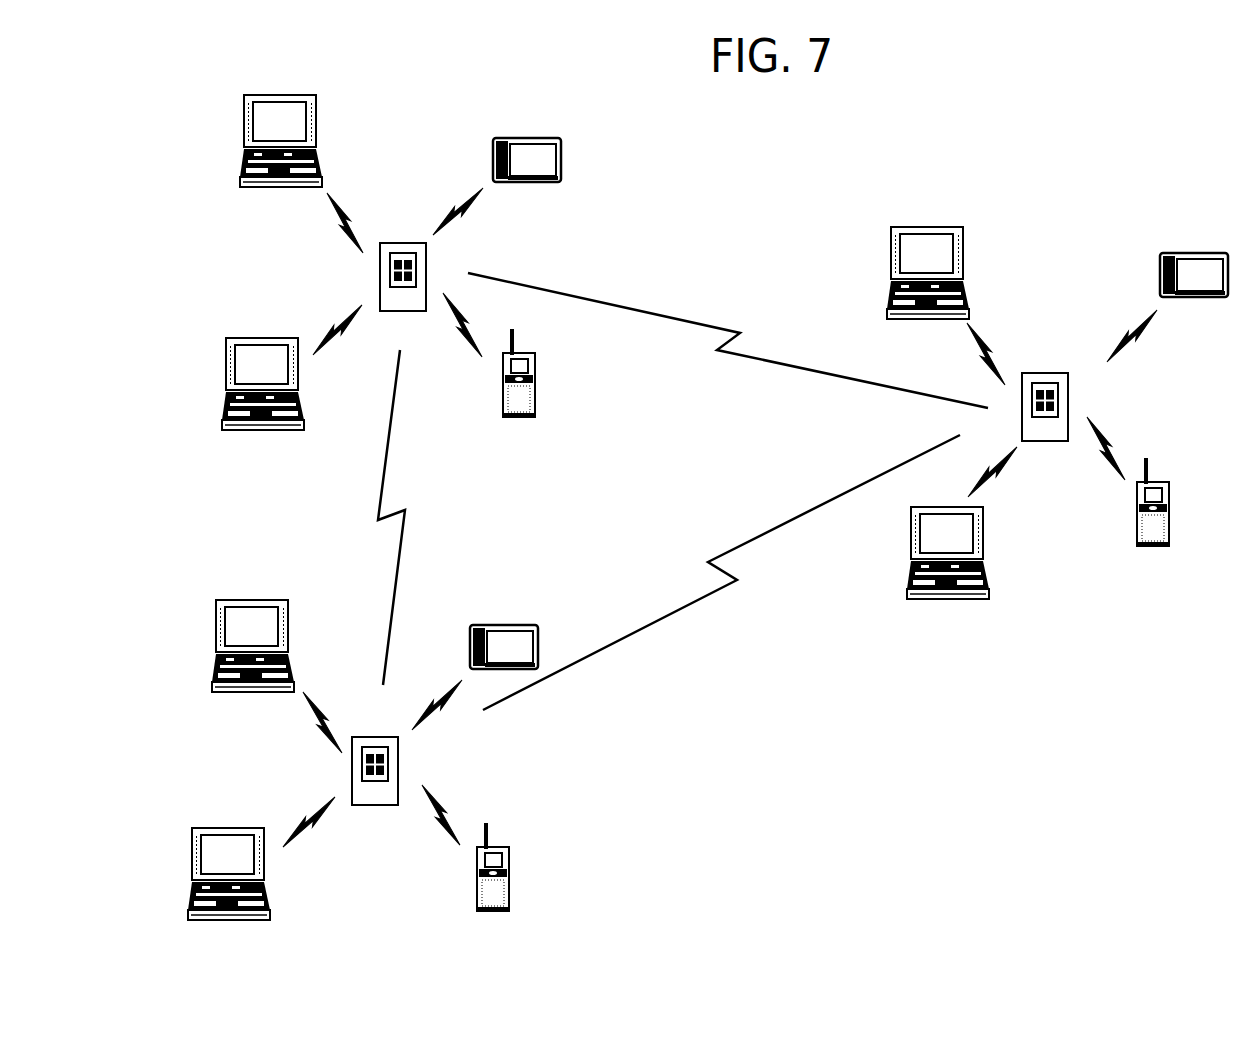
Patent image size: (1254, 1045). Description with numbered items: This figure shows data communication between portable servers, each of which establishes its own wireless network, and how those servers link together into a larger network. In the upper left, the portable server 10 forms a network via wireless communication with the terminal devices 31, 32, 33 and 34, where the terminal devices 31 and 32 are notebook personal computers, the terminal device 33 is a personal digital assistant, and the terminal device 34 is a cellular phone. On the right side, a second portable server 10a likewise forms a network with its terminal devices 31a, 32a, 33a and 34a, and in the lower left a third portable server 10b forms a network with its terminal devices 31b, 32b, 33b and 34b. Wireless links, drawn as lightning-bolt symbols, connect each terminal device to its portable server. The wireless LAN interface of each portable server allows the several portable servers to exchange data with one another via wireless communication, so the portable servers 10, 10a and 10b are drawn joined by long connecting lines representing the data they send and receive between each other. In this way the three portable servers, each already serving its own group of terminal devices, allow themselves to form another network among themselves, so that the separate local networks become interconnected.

The portable server 10 is at (378, 267).
The portable server 10a is at (1027, 373).
The portable server 10b is at (373, 805).
The terminal device 31 is at (317, 128).
The terminal device 31a is at (897, 227).
The terminal device 31b is at (230, 600).
The terminal device 32 is at (242, 340).
The terminal device 32a is at (942, 598).
The terminal device 32b is at (208, 828).
The terminal device 33 is at (532, 138).
The terminal device 33a is at (1182, 253).
The terminal device 33b is at (495, 625).
The terminal device 34 is at (528, 352).
The terminal device 34a is at (1162, 482).
The terminal device 34b is at (500, 845).